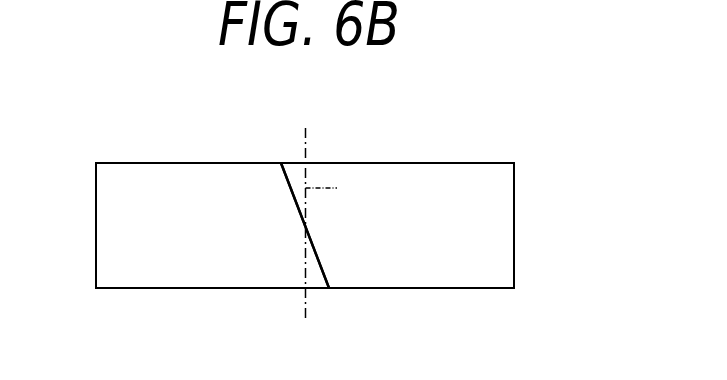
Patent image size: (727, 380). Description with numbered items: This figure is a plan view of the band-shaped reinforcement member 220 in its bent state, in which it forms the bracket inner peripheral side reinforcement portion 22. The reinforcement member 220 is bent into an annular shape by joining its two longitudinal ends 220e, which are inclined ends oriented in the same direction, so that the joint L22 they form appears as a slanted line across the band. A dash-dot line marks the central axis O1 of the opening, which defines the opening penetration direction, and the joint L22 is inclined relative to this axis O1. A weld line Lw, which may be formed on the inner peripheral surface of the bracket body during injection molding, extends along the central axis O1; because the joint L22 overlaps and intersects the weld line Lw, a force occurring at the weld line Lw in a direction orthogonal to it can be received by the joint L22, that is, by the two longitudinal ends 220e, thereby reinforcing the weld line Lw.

The bracket inner peripheral side reinforcement portion 22 is at (405, 155).
The reinforcement member 220 is at (415, 263).
The longitudinal ends 220e is at (296, 203).
The joint L22 is at (287, 180).
The weld line Lw is at (306, 190).
The central axis O1 is at (307, 240).